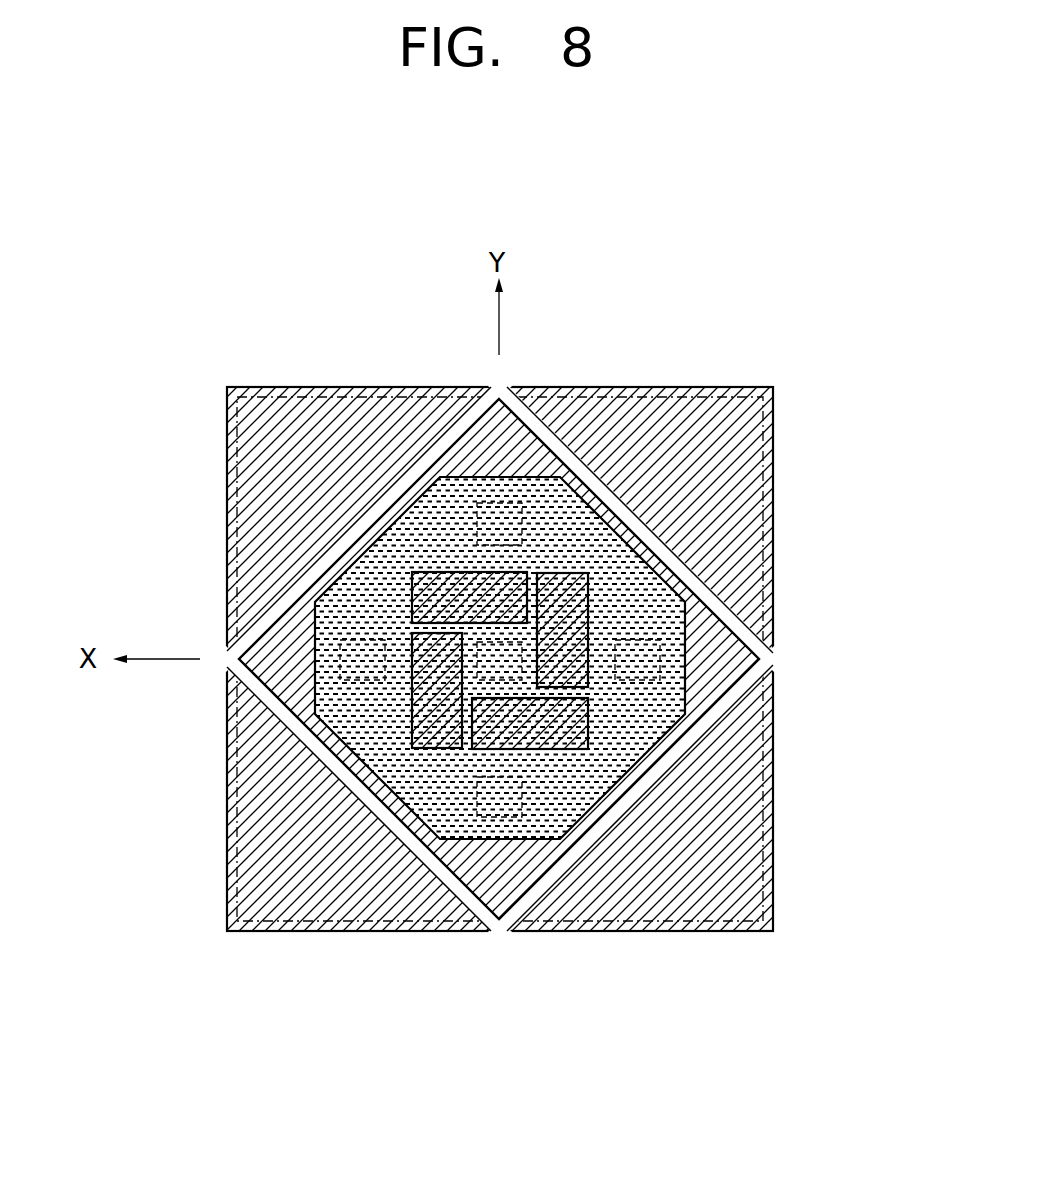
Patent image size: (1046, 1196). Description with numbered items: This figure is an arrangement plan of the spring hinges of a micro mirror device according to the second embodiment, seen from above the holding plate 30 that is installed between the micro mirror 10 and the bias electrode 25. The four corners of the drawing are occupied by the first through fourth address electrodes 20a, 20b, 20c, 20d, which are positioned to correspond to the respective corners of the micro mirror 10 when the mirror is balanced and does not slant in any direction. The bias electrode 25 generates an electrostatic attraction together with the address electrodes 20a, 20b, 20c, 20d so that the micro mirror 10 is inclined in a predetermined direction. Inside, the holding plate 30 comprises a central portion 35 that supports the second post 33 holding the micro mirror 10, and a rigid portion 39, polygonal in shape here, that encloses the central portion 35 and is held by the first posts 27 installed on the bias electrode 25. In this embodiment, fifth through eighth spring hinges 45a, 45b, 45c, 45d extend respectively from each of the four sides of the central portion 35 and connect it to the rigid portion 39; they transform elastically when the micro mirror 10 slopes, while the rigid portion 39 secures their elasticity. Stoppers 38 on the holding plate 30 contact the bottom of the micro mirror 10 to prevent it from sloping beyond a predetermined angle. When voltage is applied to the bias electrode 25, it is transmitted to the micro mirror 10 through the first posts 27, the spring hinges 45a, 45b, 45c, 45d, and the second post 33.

The micro mirror 10 is at (765, 443).
The first address electrode 20a is at (326, 931).
The second address electrode 20b is at (706, 931).
The third address electrode 20c is at (706, 387).
The fourth address electrode 20d is at (326, 387).
The bias electrode 25 is at (740, 657).
The first posts 27 is at (685, 648).
The holding plate 30 is at (340, 780).
The second post 33 is at (522, 655).
The central portion 35 is at (491, 630).
The stoppers 38 is at (315, 655).
The rigid portion 39 is at (632, 745).
The fifth spring hinge 45a is at (463, 740).
The sixth spring hinge 45b is at (573, 692).
The seventh spring hinge 45c is at (537, 588).
The eighth spring hinge 45d is at (437, 628).